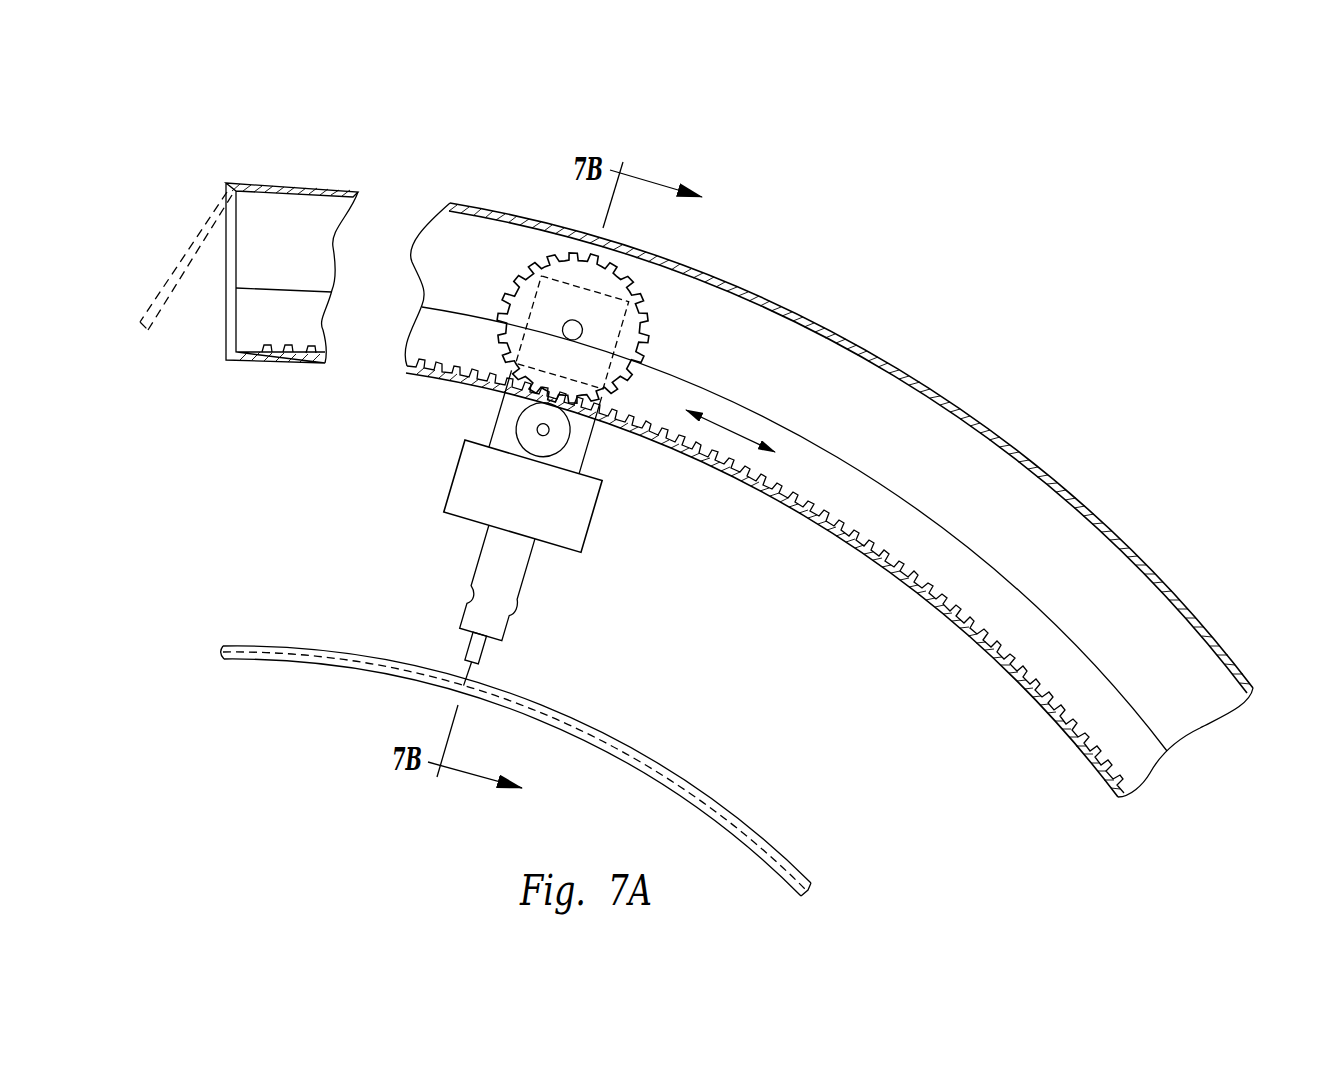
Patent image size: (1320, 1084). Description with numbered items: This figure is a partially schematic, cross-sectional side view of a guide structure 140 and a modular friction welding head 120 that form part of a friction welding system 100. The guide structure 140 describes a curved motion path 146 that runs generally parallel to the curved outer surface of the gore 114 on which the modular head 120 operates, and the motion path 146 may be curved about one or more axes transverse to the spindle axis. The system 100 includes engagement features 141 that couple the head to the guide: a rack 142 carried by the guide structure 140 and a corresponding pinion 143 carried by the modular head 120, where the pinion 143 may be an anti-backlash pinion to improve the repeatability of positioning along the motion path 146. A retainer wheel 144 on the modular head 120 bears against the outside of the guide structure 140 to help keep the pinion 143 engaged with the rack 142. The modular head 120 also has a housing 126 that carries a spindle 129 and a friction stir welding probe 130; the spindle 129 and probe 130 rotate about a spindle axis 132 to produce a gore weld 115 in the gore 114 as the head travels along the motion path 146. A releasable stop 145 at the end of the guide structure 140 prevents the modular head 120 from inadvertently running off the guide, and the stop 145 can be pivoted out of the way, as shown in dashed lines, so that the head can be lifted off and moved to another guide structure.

The system 100 is at (948, 234).
The gore 114 is at (612, 742).
The gore weld 115 is at (690, 792).
The modular friction welding head 120 is at (555, 453).
The housing 126 is at (451, 482).
The spindle 129 is at (519, 570).
The friction stir welding probe 130 is at (481, 654).
The spindle axis 132 is at (462, 675).
The guide structure 140 is at (1032, 462).
The engagement features 141 is at (660, 345).
The rack 142 is at (807, 507).
The pinion 143 is at (607, 283).
The retainer wheel 144 is at (565, 455).
The releasable stop 145 is at (232, 227).
The motion path 146 is at (746, 434).